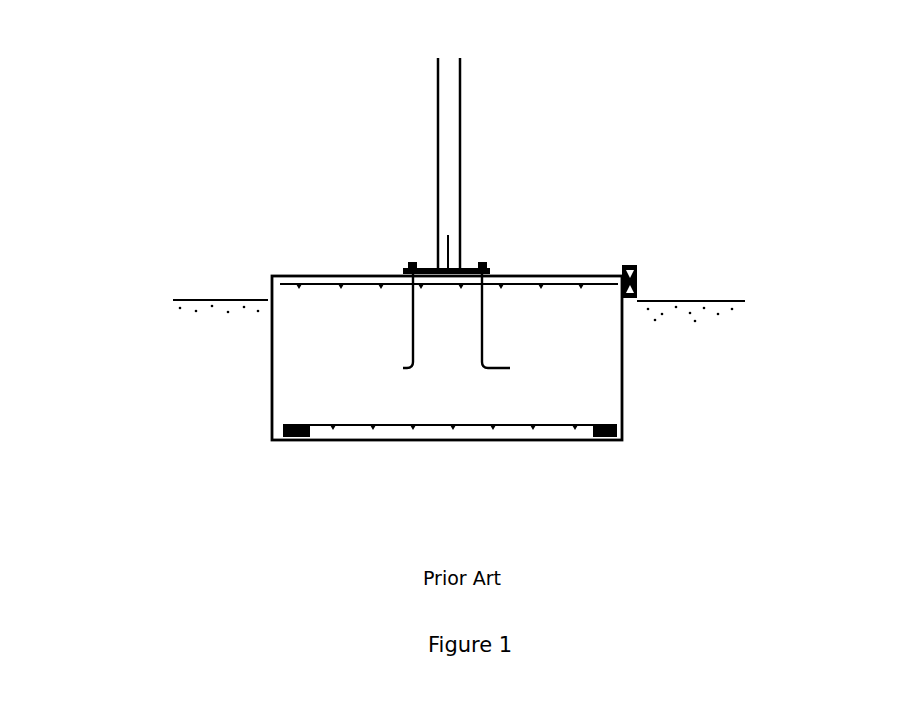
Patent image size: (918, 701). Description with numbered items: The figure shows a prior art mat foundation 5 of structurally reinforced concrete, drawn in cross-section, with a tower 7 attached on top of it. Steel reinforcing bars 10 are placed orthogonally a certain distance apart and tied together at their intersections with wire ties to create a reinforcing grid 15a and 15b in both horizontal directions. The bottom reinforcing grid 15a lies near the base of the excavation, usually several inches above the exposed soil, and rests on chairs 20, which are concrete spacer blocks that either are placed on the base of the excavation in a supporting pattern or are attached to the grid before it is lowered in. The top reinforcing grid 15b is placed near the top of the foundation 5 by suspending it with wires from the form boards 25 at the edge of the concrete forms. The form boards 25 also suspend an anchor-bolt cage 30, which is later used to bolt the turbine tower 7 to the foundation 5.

The mat foundation 5 is at (208, 187).
The tower 7 is at (448, 118).
The anchor-bolt cage 30 is at (392, 256).
The top reinforcing grid 15b is at (520, 280).
The bottom reinforcing grid 15a is at (518, 430).
The steel reinforcing bars 10 is at (377, 287).
The chairs 20 is at (305, 442).
The form boards 25 is at (638, 277).